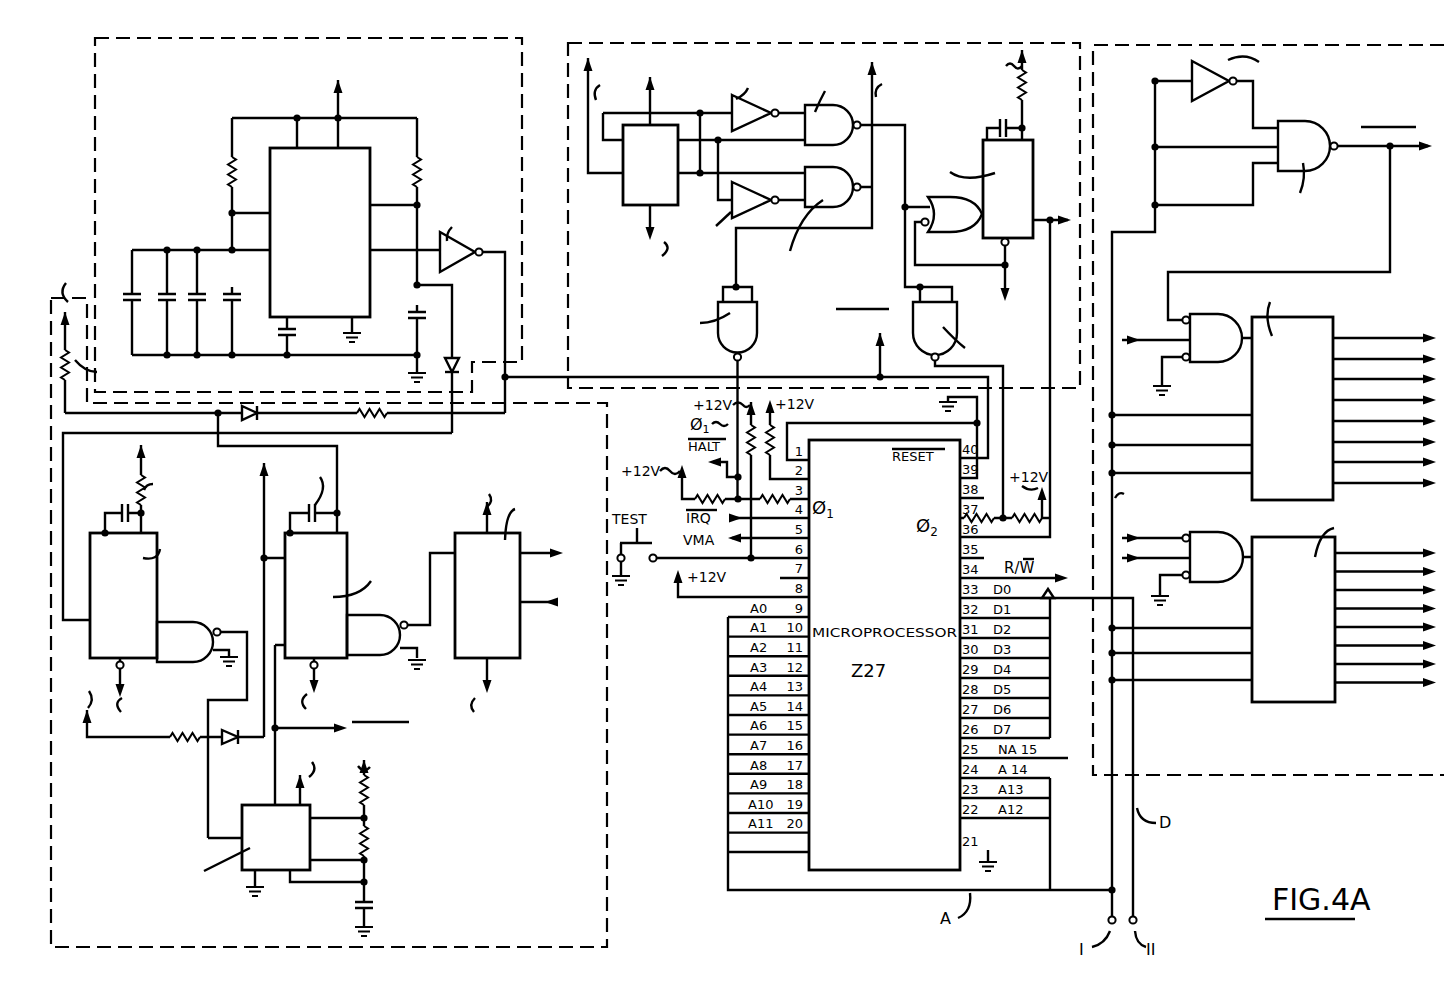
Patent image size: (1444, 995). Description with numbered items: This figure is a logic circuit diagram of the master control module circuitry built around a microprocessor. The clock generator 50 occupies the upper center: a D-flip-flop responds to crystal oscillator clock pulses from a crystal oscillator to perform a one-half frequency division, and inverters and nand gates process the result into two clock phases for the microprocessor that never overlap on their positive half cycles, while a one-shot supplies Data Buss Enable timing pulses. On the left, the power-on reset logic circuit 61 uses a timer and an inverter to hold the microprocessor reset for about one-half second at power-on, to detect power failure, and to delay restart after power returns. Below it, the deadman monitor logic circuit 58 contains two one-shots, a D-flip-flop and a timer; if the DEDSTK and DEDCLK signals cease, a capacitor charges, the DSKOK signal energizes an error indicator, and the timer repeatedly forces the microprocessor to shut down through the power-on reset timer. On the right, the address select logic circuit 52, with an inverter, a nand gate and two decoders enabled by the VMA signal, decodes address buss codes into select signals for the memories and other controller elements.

The clock generator 50 is at (792, 290).
The address select logic circuit 52 is at (1268, 480).
The deadman monitor logic circuit 58 is at (329, 622).
The power-on reset logic circuit 61 is at (281, 235).